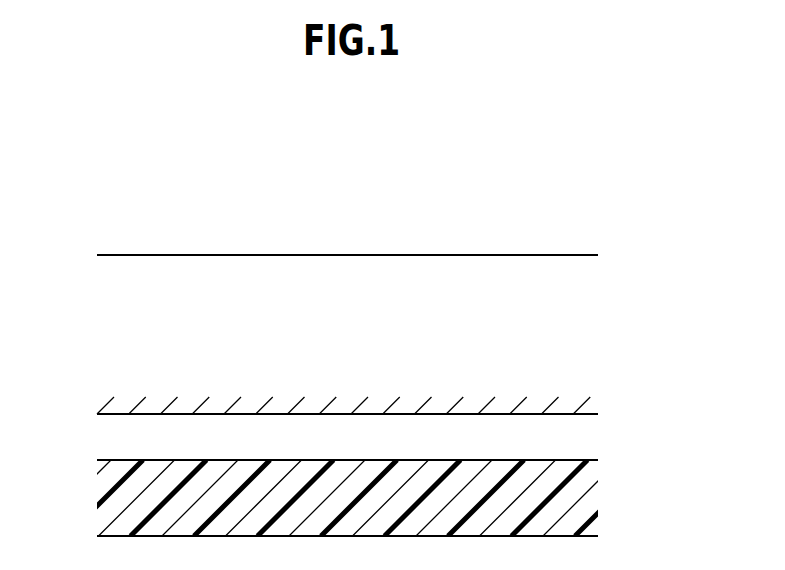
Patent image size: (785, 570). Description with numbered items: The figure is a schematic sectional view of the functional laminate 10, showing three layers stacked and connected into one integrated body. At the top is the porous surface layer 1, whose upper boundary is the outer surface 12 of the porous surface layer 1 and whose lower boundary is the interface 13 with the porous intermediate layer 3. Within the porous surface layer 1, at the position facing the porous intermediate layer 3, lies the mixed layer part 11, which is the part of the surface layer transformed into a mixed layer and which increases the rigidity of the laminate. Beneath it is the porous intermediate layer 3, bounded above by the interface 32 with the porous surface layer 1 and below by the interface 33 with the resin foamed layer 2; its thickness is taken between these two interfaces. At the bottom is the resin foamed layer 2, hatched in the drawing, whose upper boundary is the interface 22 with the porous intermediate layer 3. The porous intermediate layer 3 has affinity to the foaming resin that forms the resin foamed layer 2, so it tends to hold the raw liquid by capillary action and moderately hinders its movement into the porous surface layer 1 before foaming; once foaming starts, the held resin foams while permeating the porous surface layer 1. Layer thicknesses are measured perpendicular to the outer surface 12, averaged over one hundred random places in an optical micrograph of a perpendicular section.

The functional laminate 10 is at (551, 232).
The porous surface layer 1 is at (85, 254).
The outer surface of porous surface layer 12 is at (543, 255).
The mixed layer part 11 is at (507, 400).
The interface of porous surface layer with porous intermediate layer 13 is at (530, 412).
The porous intermediate layer 3 is at (85, 415).
The interface of porous intermediate layer with porous surface layer 32 is at (570, 415).
The interface of porous intermediate layer with resin foamed layer 33 is at (567, 460).
The resin foamed layer 2 is at (85, 463).
The interface of resin foamed layer with porous intermediate layer 22 is at (542, 460).